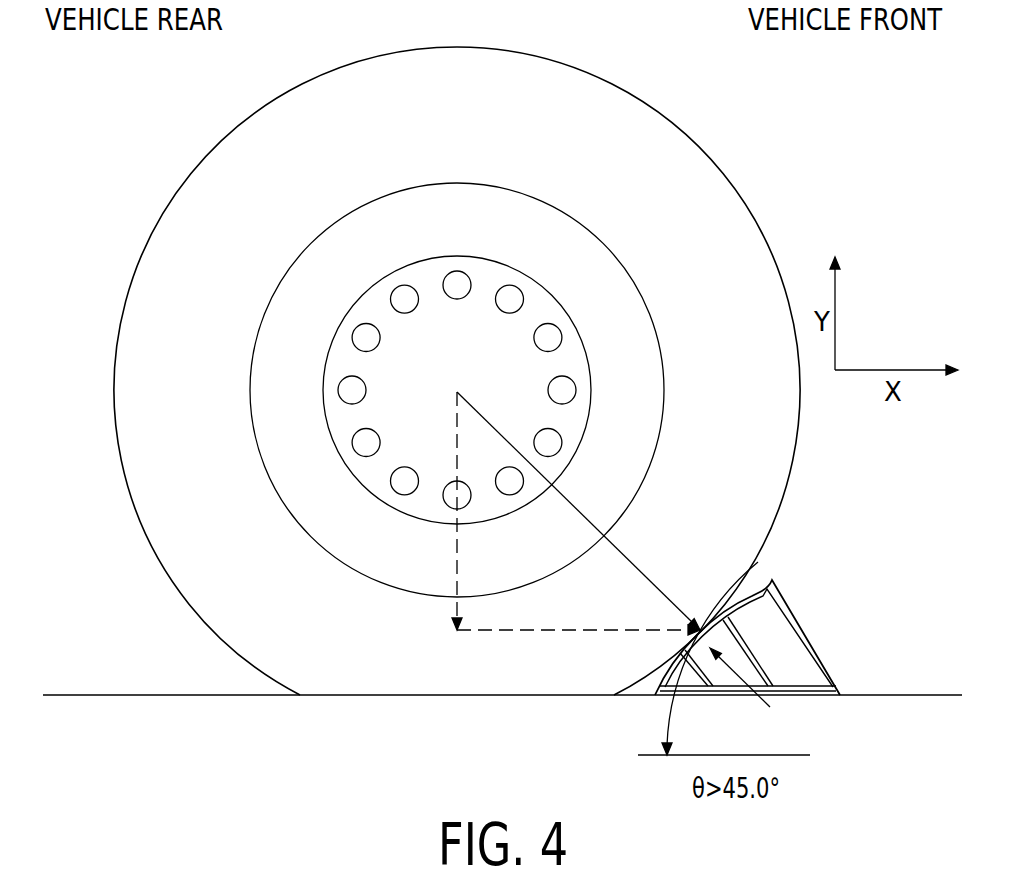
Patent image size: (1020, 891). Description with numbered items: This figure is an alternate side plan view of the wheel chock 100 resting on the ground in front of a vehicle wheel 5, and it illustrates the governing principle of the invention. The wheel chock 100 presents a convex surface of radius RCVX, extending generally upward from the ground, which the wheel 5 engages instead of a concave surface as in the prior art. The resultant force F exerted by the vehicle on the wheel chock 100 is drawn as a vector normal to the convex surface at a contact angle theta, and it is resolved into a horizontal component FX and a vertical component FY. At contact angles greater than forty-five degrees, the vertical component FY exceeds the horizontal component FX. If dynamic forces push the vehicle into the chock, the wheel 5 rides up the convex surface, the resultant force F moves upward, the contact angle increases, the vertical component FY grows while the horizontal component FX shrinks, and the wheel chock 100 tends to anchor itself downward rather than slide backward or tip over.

The wheel 5 is at (720, 172).
The wheel chock 100 is at (810, 642).
The resultant force F is at (571, 497).
The horizontal component FX is at (578, 650).
The vertical component FY is at (441, 511).
The radius of curvature of the convex surface RCVX is at (819, 753).